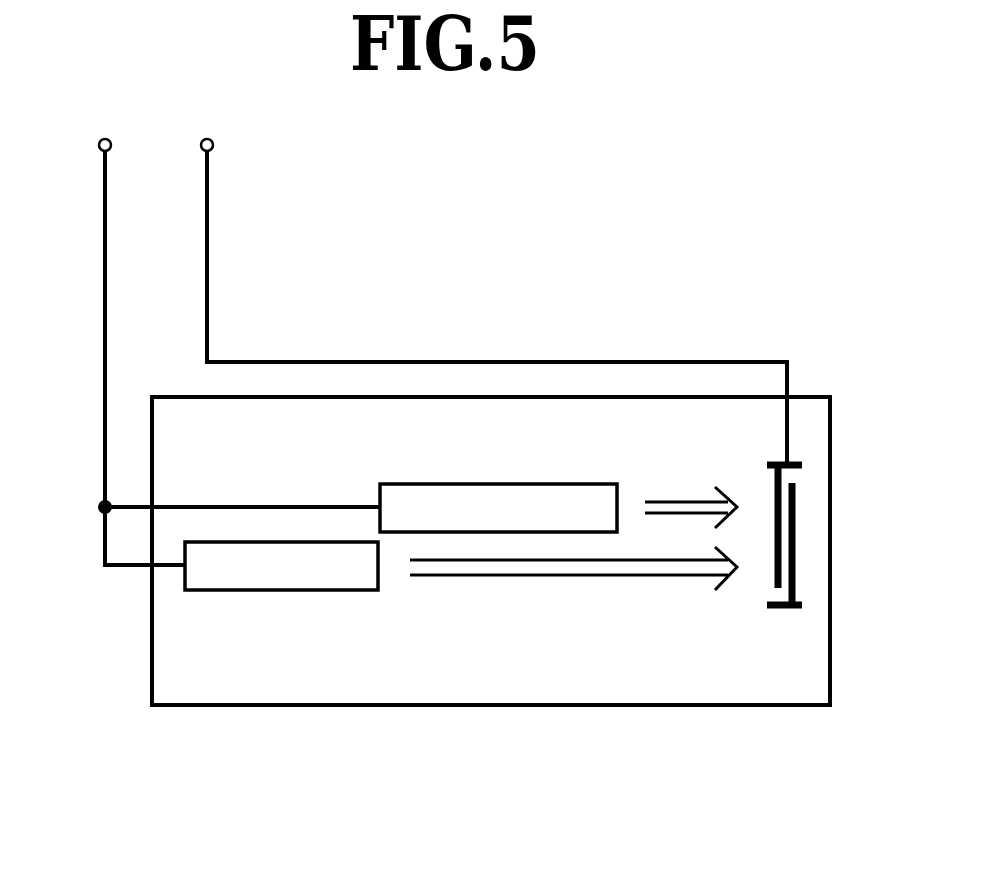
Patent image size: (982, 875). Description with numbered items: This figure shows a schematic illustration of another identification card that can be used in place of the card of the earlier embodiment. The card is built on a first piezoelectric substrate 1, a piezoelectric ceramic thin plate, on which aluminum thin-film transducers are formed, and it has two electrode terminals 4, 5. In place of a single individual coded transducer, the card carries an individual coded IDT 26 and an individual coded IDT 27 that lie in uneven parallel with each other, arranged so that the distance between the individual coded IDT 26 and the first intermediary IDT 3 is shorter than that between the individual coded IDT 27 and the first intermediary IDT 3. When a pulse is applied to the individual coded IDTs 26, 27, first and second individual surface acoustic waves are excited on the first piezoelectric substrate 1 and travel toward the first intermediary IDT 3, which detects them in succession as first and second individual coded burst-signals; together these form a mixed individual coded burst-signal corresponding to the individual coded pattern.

The first piezoelectric substrate 1 is at (168, 640).
The first intermediary IDT 3 is at (767, 512).
The electrode terminal 4 is at (216, 341).
The electrode terminal 5 is at (494, 291).
The individual coded IDT 26 is at (410, 513).
The individual coded IDT 27 is at (232, 572).